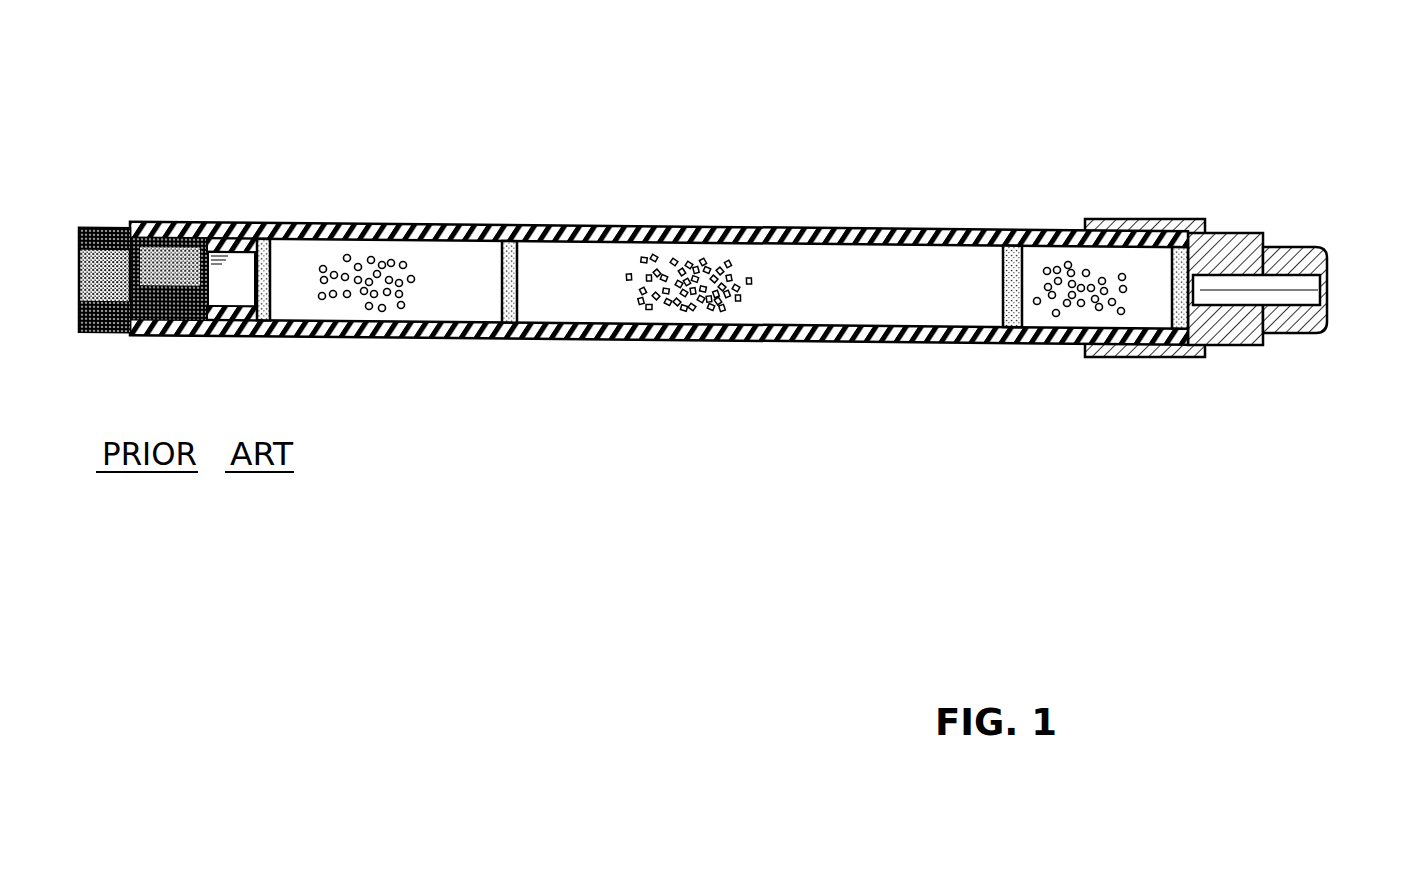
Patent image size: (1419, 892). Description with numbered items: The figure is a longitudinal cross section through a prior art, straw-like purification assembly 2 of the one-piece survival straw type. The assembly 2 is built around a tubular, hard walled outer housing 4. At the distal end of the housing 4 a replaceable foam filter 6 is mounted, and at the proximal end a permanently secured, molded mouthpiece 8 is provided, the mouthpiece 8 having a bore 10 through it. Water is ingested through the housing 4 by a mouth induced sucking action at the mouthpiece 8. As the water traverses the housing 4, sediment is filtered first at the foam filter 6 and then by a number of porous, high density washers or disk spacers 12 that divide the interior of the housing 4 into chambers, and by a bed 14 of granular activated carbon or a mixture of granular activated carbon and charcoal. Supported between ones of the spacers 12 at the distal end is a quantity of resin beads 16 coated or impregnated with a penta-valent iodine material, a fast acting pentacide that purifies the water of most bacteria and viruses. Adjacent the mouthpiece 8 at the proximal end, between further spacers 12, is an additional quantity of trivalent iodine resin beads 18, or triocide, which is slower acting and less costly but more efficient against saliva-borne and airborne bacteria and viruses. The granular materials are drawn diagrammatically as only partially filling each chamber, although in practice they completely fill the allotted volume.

The purification assembly 2 is at (725, 225).
The outer housing 4 is at (773, 232).
The foam filter 6 is at (80, 230).
The mouthpiece 8 is at (1240, 347).
The bore 10 is at (1323, 293).
The disk spacers 12 is at (263, 231).
The bed of granular activated carbon 14 is at (712, 312).
The particulate material 16 is at (378, 312).
The particulate material 18 is at (1063, 312).